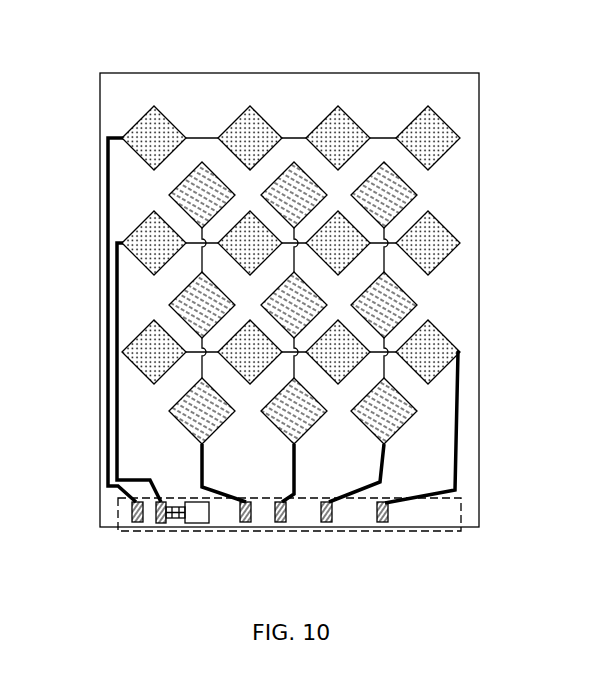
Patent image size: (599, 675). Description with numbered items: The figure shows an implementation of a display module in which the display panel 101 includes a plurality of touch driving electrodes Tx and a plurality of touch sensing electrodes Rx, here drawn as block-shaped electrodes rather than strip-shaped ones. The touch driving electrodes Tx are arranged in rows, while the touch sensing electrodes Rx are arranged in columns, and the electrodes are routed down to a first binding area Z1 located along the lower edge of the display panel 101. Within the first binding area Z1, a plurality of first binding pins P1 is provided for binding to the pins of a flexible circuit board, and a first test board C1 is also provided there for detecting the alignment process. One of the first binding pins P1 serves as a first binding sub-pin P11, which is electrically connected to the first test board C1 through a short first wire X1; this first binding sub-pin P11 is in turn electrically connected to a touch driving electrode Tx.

The display panel 101 is at (357, 73).
The touch driving electrode Tx is at (128, 132).
The touch sensing electrode Rx is at (408, 203).
The first binding sub-pin P11 is at (161, 523).
The first wire X1 is at (174, 517).
The first test board C1 is at (201, 517).
The first binding pin P1 is at (328, 519).
The first binding area Z1 is at (432, 531).